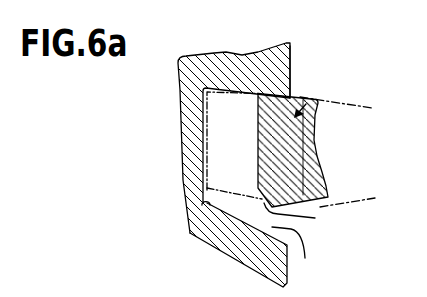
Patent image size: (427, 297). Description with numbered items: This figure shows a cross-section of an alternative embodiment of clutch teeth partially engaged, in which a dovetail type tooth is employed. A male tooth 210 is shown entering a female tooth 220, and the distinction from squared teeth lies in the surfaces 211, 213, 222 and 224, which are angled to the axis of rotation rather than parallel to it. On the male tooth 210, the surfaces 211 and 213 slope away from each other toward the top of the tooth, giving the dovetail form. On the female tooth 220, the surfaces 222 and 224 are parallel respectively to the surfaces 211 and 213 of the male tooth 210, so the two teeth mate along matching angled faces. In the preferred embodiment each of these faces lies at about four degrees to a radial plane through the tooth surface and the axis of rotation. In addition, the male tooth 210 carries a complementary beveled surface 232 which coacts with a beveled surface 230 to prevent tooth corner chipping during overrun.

The male dovetail tooth 210 is at (303, 98).
The angled tooth surface 211 is at (294, 98).
The angled tooth surface 213 is at (337, 204).
The female dovetail tooth 220 is at (195, 127).
The angled tooth surface 222 is at (229, 97).
The angled tooth surface 224 is at (202, 208).
The beveled surface 230 is at (267, 245).
The complementary beveled surface 232 is at (304, 230).